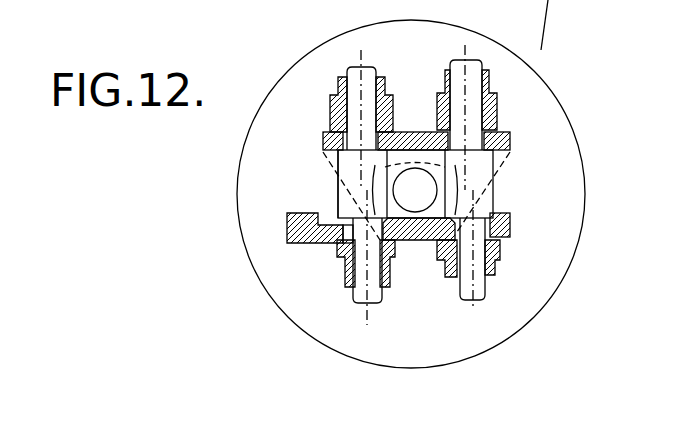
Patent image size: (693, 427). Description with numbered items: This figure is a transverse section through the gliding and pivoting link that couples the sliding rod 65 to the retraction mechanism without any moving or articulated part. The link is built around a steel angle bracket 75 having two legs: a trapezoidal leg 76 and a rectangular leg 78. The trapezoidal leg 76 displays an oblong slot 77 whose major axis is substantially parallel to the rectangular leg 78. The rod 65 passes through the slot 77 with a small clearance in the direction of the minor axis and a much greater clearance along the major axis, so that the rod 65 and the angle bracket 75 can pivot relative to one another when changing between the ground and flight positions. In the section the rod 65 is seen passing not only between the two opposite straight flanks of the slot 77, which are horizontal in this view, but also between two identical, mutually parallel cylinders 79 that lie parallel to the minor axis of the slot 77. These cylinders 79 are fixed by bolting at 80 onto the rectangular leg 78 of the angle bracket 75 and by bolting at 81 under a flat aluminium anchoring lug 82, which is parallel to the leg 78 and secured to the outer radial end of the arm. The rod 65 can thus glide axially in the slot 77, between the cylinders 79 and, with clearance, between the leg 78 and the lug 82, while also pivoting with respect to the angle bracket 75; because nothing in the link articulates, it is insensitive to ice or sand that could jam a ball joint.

The sliding rod 65 is at (423, 190).
The steel angle bracket 75 is at (507, 135).
The trapezoidal leg 76 is at (332, 165).
The oblong slot 77 is at (393, 230).
The rectangular leg 78 is at (415, 128).
The cylinders 79 is at (350, 202).
The bolting 80 is at (337, 110).
The bolting 81 is at (335, 258).
The flat aluminium anchoring lug 82 is at (510, 223).